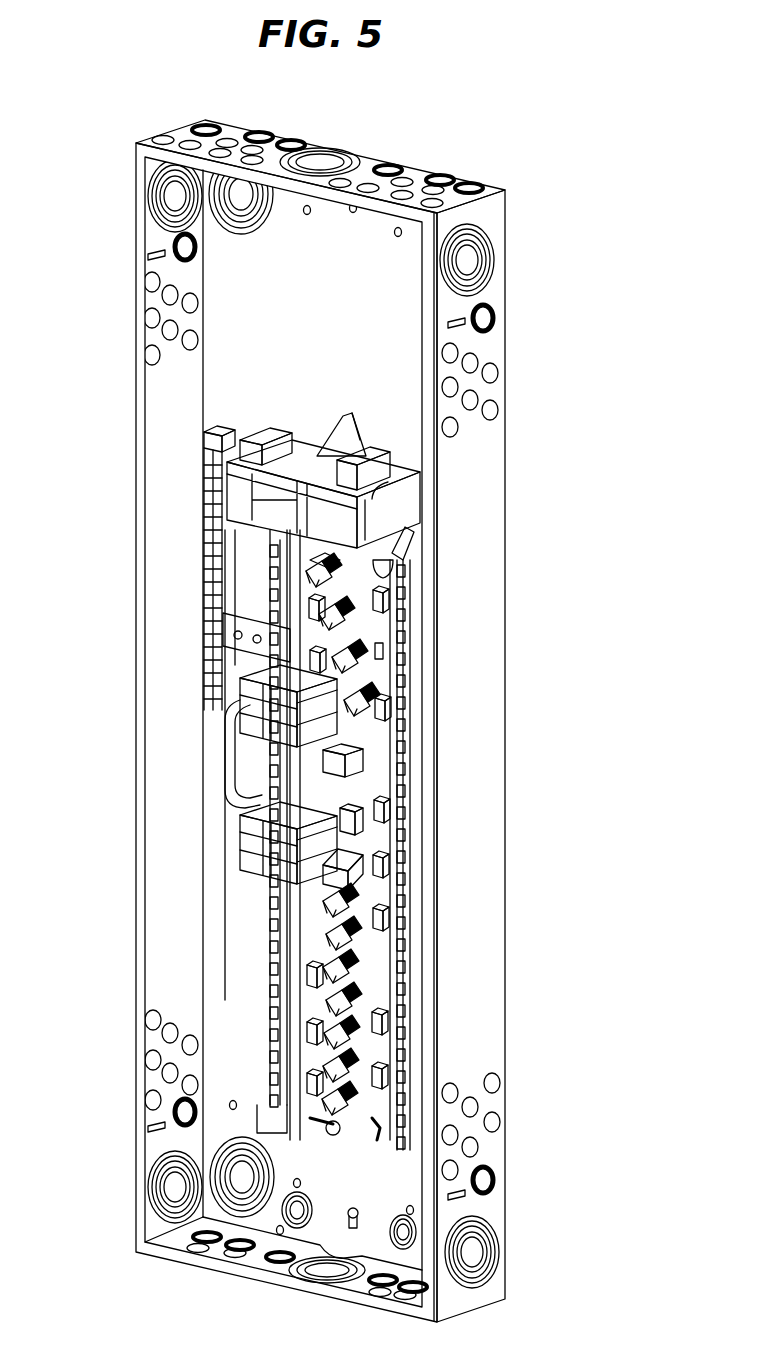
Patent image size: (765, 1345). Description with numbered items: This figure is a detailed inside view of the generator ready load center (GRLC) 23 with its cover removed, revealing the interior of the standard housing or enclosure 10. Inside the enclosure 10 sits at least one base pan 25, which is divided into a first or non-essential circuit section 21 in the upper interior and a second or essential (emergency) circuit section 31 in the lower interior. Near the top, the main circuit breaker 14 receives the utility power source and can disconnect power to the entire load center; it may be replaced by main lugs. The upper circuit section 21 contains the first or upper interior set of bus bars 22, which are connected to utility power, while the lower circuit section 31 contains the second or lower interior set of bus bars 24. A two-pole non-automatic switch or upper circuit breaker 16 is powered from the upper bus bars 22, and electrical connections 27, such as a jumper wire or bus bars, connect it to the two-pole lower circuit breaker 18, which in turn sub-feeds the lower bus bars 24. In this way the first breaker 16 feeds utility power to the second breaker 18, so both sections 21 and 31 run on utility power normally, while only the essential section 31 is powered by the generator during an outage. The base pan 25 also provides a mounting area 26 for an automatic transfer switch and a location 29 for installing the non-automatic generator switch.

The enclosure 10 is at (483, 455).
The main circuit breaker 14 is at (385, 521).
The upper circuit breaker 16 is at (240, 695).
The lower circuit breaker 18 is at (240, 858).
The non-essential circuit section 21 is at (380, 626).
The upper interior set of bus bars 22 is at (313, 657).
The generator ready load center 23 is at (538, 292).
The lower interior set of bus bars 24 is at (305, 1035).
The base pan 25 is at (376, 791).
The mounting area 26 is at (300, 787).
The electrical connections 27 is at (255, 775).
The location for installation of the non-automatic generator switch 29 is at (405, 830).
The essential circuit section 31 is at (380, 996).